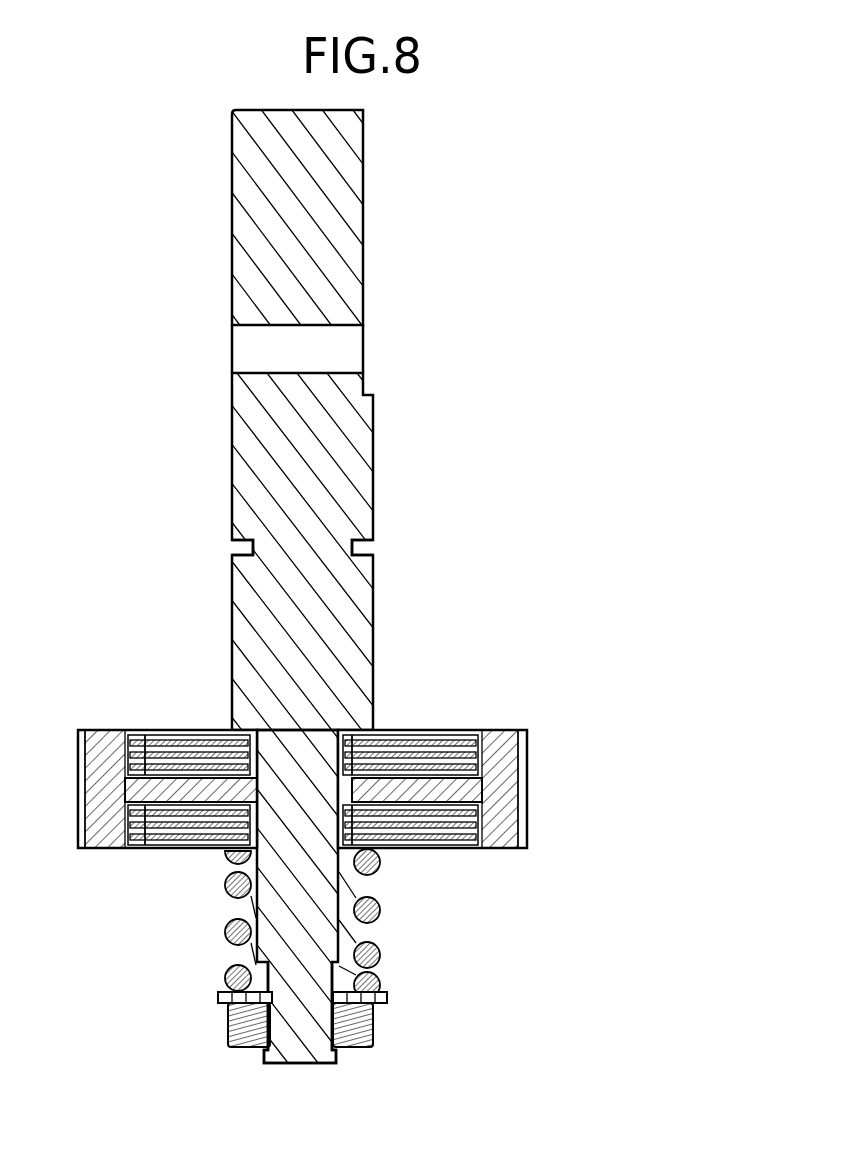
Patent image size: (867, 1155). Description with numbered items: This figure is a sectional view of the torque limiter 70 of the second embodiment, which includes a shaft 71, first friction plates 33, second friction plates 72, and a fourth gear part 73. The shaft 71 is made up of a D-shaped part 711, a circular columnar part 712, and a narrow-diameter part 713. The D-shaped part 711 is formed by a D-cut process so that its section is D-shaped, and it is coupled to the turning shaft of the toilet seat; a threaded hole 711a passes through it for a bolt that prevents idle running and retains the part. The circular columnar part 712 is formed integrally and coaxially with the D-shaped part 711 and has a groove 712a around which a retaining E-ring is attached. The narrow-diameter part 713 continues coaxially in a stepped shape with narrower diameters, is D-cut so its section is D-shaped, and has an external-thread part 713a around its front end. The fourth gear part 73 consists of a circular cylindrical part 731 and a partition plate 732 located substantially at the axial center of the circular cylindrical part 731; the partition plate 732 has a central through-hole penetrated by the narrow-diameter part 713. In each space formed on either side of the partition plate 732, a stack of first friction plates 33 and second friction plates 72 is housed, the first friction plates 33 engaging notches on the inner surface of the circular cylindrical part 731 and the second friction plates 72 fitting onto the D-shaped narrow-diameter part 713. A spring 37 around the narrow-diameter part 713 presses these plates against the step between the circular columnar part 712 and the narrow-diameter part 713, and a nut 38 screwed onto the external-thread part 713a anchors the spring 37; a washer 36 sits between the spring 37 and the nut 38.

The torque limiter 70 is at (633, 368).
The shaft 71 is at (213, 465).
The D-shaped part 711 is at (347, 248).
The threaded hole 711a is at (290, 350).
The circular columnar part 712 is at (352, 605).
The groove 712a is at (245, 548).
The narrow-diameter part 713 is at (307, 888).
The external-thread part 713a is at (304, 1050).
The second friction plates 72 is at (438, 732).
The fourth gear part 73 is at (547, 853).
The circular cylindrical part 731 is at (108, 728).
The partition plate 732 is at (382, 732).
The first friction plates 33 is at (125, 828).
The washer 36 is at (390, 1000).
The spring 37 is at (226, 942).
The nut 38 is at (378, 1022).